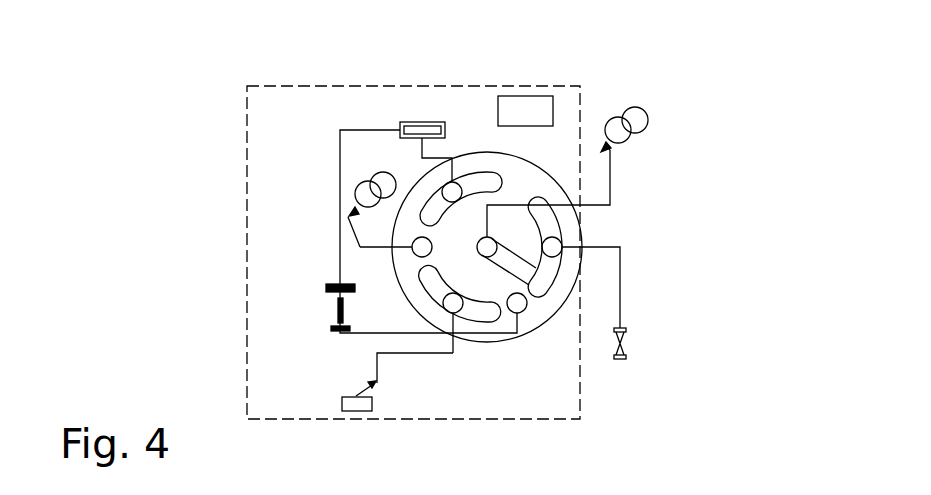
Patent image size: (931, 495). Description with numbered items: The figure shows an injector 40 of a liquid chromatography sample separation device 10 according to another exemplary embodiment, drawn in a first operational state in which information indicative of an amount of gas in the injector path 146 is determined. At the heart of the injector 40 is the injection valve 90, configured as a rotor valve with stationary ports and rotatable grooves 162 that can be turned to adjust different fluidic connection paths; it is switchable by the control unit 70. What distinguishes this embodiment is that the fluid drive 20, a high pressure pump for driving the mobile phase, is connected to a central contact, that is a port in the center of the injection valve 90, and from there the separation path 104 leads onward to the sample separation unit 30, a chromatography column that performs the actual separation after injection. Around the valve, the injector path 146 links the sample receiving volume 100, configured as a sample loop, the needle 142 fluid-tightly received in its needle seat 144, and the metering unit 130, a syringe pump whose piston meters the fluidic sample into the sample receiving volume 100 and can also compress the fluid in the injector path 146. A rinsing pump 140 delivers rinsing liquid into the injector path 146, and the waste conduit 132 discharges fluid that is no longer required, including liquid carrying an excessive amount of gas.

The sample separation device 10 is at (702, 88).
The fluid drive 20 is at (636, 108).
The sample separation unit 30 is at (627, 337).
The injector 40 is at (247, 86).
The control unit 70 is at (525, 111).
The injection valve 90 is at (487, 315).
The sample receiving volume 100 is at (326, 288).
The separation path 104 is at (612, 180).
The metering unit 130 is at (417, 120).
The waste conduit 132 is at (403, 356).
The rinsing pump 140 is at (356, 190).
The needle 142 is at (338, 310).
The needle seat 144 is at (340, 327).
The injector path 146 is at (420, 150).
The rotatable grooves 162 is at (477, 180).